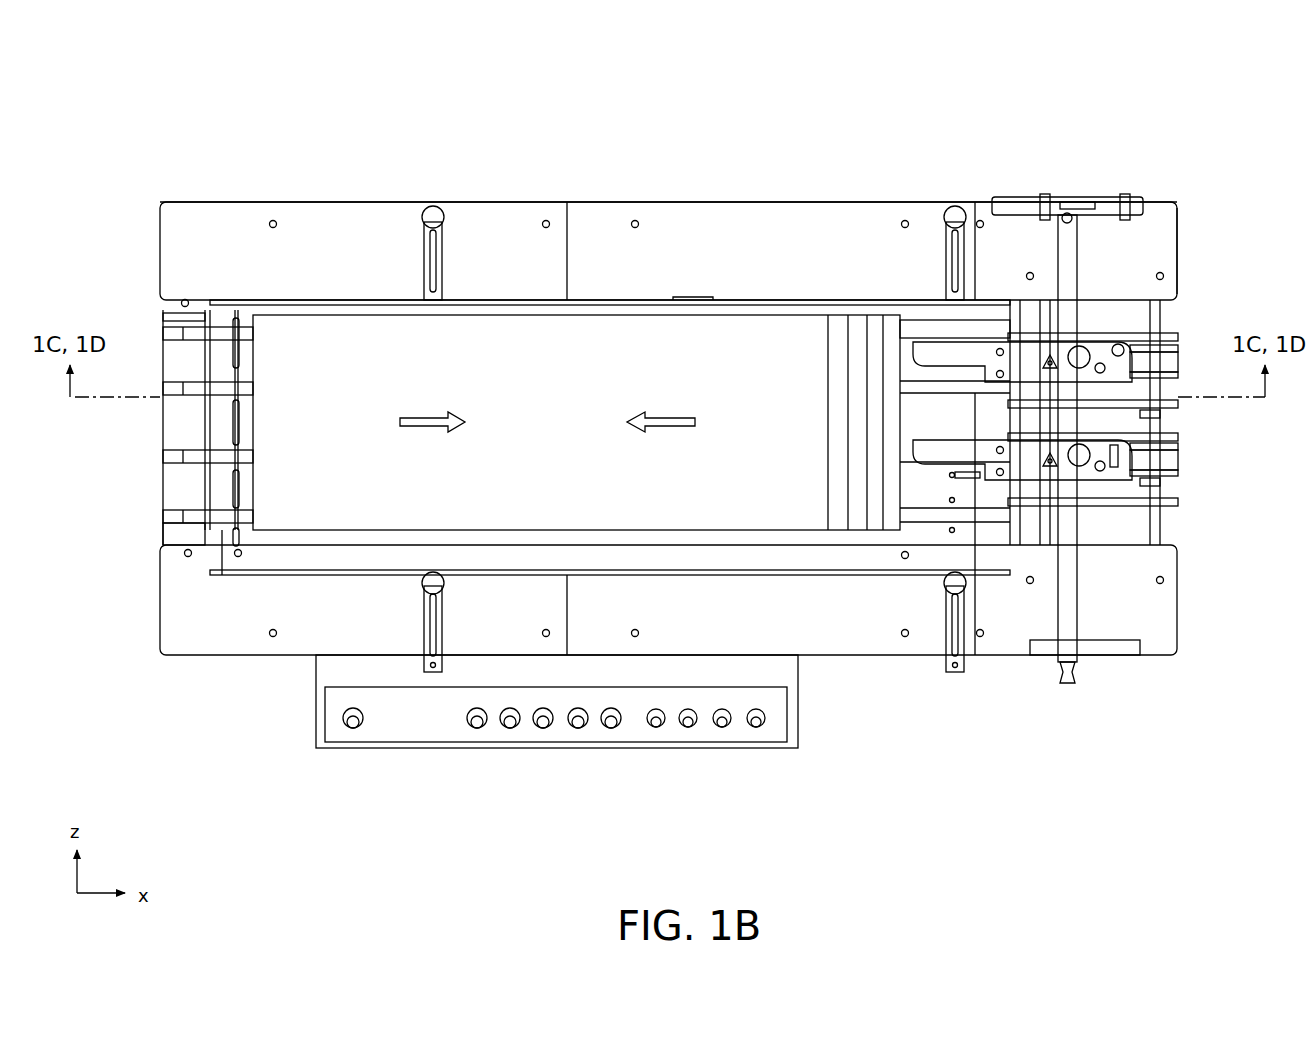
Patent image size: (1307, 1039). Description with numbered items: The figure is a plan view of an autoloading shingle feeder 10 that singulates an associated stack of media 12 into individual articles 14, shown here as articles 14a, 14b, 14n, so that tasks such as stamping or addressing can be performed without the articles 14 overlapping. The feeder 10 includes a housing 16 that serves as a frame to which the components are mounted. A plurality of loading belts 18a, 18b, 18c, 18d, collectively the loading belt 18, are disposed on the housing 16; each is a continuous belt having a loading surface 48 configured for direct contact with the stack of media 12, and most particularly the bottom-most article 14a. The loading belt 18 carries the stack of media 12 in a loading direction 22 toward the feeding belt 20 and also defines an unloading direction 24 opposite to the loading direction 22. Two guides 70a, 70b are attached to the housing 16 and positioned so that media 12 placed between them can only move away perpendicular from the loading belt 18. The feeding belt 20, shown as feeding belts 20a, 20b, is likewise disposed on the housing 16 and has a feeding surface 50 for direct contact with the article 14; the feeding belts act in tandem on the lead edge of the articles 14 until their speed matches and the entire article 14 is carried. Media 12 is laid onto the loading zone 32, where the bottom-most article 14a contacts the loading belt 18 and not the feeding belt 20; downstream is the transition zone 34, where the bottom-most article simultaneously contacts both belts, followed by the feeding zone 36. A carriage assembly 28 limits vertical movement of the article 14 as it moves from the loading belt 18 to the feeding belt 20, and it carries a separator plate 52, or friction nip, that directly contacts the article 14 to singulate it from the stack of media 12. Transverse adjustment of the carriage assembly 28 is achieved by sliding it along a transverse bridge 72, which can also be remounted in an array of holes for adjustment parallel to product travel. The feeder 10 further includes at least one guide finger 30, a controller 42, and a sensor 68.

The autoloading shingle feeder 10 is at (105, 66).
The stack of media 12 is at (607, 178).
The article 14 is at (785, 290).
The bottom-most article 14a is at (896, 318).
The article 14b is at (880, 318).
The article 14n is at (865, 318).
The housing 16 is at (92, 622).
The loading belt 18 is at (92, 440).
The loading belt 18a is at (163, 516).
The loading belt 18b is at (163, 456).
The loading belt 18c is at (163, 387).
The loading belt 18d is at (163, 330).
The feeding belt 20 is at (1203, 420).
The feeding belt 20a is at (1190, 510).
The feeding belt 20b is at (1195, 365).
The loading direction 22 is at (405, 418).
The unloading direction 24 is at (665, 418).
The carriage assembly 28 is at (1140, 694).
The guide finger 30 is at (1178, 405).
The loading zone 32 is at (540, 180).
The transition zone 34 is at (1068, 180).
The feeding zone 36 is at (1162, 178).
The controller 42 is at (633, 766).
The loading surface 48 is at (222, 560).
The feeding surface 50 is at (1183, 470).
The separator plate 52 is at (978, 480).
The sensor 68 is at (1175, 425).
The guide 70a is at (248, 576).
The guide 70b is at (220, 300).
The transverse bridge 72 is at (1068, 692).